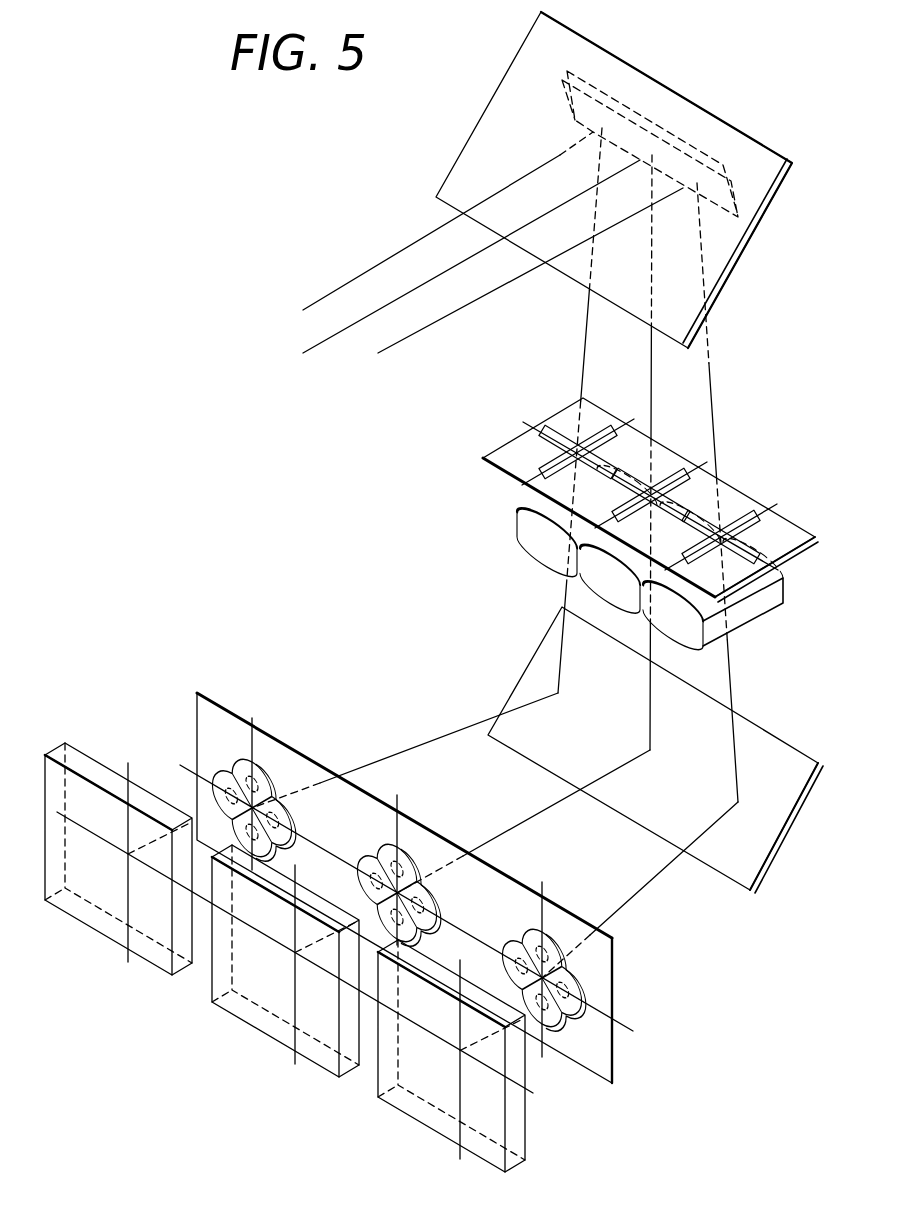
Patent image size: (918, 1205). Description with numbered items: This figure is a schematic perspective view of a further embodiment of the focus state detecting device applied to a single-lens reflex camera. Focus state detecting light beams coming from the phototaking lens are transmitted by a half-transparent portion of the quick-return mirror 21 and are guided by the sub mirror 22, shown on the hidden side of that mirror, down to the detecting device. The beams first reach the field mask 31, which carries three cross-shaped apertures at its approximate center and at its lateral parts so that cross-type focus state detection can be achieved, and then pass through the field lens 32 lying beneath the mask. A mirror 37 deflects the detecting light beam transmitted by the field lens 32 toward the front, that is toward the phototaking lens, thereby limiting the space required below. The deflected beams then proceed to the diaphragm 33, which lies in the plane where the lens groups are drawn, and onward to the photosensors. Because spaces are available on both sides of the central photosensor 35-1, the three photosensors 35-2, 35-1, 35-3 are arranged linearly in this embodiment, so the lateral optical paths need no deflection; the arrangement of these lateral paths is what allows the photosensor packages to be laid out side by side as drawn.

The quick-return mirror 21 is at (486, 108).
The sub mirror 22 is at (648, 118).
The field mask 31 is at (740, 493).
The field lens 32 is at (527, 527).
The diaphragm 33 is at (219, 717).
The mirror 37 is at (537, 663).
The central photosensor 35-1 is at (253, 1023).
The photosensor 35-2 is at (72, 920).
The photosensor 35-3 is at (398, 1104).